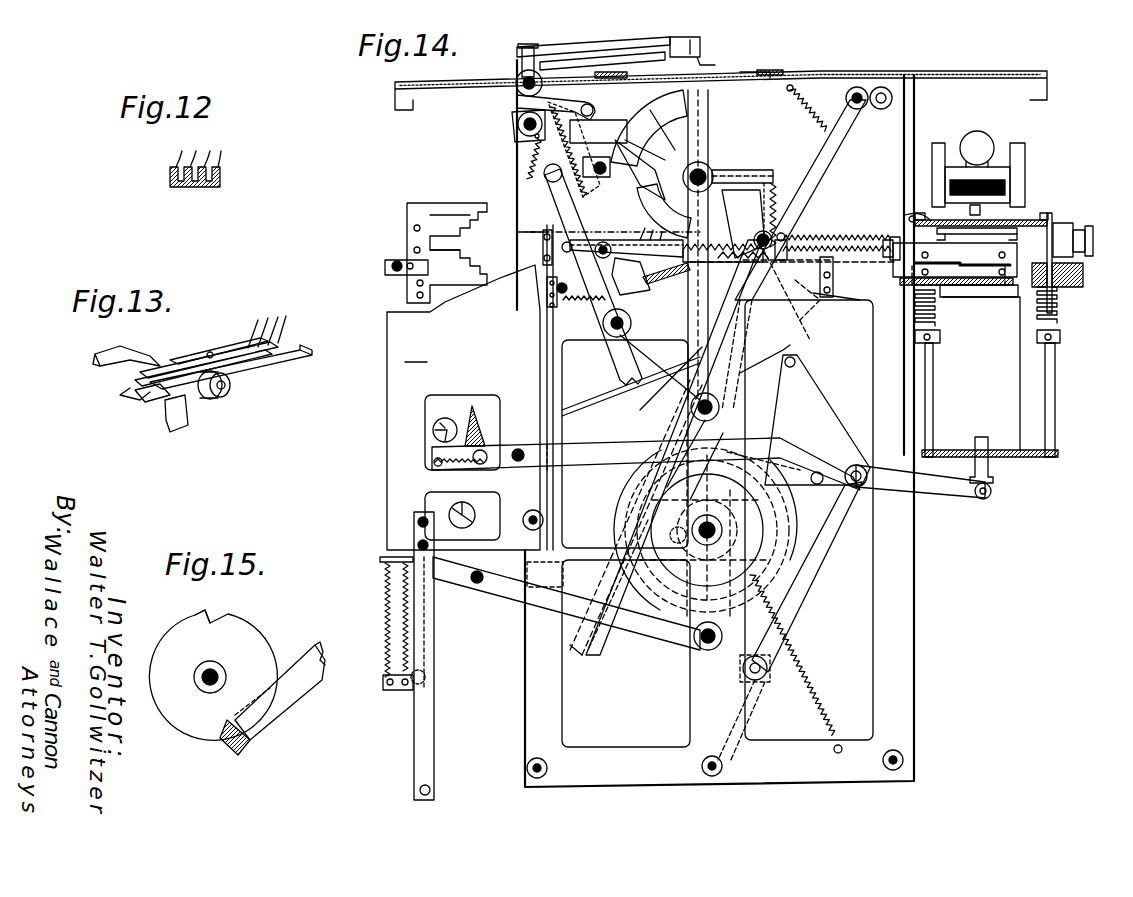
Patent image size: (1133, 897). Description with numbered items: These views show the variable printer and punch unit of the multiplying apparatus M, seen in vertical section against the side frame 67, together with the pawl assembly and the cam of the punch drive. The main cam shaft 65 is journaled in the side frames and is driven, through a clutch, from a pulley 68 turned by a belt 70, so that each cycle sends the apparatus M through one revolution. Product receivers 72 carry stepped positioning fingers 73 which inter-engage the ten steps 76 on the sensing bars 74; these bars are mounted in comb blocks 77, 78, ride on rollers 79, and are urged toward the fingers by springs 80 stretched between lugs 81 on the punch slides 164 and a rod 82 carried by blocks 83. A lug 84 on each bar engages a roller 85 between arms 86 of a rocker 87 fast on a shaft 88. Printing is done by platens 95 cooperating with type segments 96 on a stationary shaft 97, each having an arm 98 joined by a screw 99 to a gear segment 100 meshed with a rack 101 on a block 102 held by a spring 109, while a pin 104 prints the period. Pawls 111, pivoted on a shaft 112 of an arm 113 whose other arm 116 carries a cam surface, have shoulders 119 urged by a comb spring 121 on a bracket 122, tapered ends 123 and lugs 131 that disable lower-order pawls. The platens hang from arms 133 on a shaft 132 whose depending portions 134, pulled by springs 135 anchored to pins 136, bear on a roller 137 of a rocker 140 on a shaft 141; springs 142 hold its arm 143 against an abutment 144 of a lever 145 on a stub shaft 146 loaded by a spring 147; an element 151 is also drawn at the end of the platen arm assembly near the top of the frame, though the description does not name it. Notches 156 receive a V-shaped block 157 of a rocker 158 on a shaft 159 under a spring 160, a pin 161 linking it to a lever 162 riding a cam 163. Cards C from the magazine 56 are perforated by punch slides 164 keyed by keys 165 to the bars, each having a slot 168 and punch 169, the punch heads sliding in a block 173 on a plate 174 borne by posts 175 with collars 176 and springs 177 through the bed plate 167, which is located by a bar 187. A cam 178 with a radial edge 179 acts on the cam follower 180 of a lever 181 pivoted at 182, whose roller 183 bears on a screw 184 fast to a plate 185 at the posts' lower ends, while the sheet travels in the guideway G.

In FIG. 14, the magazine 56 is at (1025, 153).
In FIG. 15, the main cam shaft 65 is at (203, 675).
In FIG. 14, the main cam shaft 65 is at (723, 531).
In FIG. 14, the side frame 67 is at (889, 115).
In FIG. 14, the pulley 68 is at (625, 485).
In FIG. 14, the belt 70 is at (790, 612).
In FIG. 14, the product receiver 72 is at (407, 240).
In FIG. 14, the positioning finger 73 is at (445, 222).
In FIG. 14, the sensing bar 74 is at (546, 234).
In FIG. 14, the step 76 is at (543, 283).
In FIG. 14, the comb block 77 is at (567, 295).
In FIG. 14, the comb block 78 is at (837, 276).
In FIG. 14, the roller 79 is at (600, 337).
In FIG. 14, the spring 80 is at (885, 238).
In FIG. 14, the lug 81 is at (895, 237).
In FIG. 14, the rod 82 is at (802, 238).
In FIG. 14, the block 83 is at (806, 238).
In FIG. 14, the lug 84 is at (767, 359).
In FIG. 14, the roller 85 is at (702, 310).
In FIG. 14, the arm 86 is at (687, 362).
In FIG. 14, the rocker 87 is at (655, 402).
In FIG. 14, the shaft 88 is at (722, 418).
In FIG. 14, the platen 95 is at (725, 76).
In FIG. 14, the type segment 96 is at (688, 91).
In FIG. 14, the stationary shaft 97 is at (714, 166).
In FIG. 14, the arm 98 is at (775, 146).
In FIG. 14, the screw 99 is at (778, 182).
In FIG. 14, the gear segment 100 is at (697, 211).
In FIG. 14, the rack 101 is at (743, 224).
In FIG. 14, the block 102 is at (792, 330).
In FIG. 14, the pin 104 is at (695, 106).
In FIG. 14, the spring 109 is at (662, 265).
In FIG. 12, the pawl 111 is at (200, 146).
In FIG. 13, the pawl 111 is at (267, 323).
In FIG. 14, the pawl 111 is at (653, 226).
In FIG. 13, the shaft 112 is at (231, 390).
In FIG. 13, the arm 113 is at (187, 420).
In FIG. 14, the arm 116 is at (682, 325).
In FIG. 13, the shoulder 119 is at (312, 352).
In FIG. 13, the comb spring 121 is at (175, 355).
In FIG. 14, the comb spring 121 is at (617, 240).
In FIG. 13, the bracket 122 is at (98, 370).
In FIG. 13, the tapered end 123 is at (130, 390).
In FIG. 12, the lug 131 is at (214, 187).
In FIG. 13, the lug 131 is at (142, 405).
In FIG. 14, the shaft 132 is at (522, 60).
In FIG. 14, the arm 133 is at (600, 63).
In FIG. 14, the depending portion 134 is at (552, 50).
In FIG. 14, the spring 135 is at (584, 138).
In FIG. 14, the pin 136 is at (584, 190).
In FIG. 14, the roller 137 is at (622, 76).
In FIG. 14, the rocker 140 is at (510, 100).
In FIG. 14, the shaft 141 is at (513, 128).
In FIG. 14, the spring 142 is at (528, 140).
In FIG. 14, the arm 143 is at (543, 175).
In FIG. 14, the abutment 144 is at (536, 179).
In FIG. 14, the lever 145 is at (505, 280).
In FIG. 14, the stub shaft 146 is at (605, 342).
In FIG. 14, the spring 147 is at (540, 322).
In FIG. 14, the roller 151 is at (684, 36).
In FIG. 14, the notch 156 is at (781, 226).
In FIG. 14, the V-shaped block 157 is at (773, 235).
In FIG. 14, the rocker 158 is at (823, 152).
In FIG. 14, the shaft 159 is at (857, 87).
In FIG. 14, the spring 160 is at (806, 86).
In FIG. 14, the pin 161 is at (805, 310).
In FIG. 14, the lever 162 is at (641, 432).
In FIG. 14, the cam 163 is at (665, 598).
In FIG. 14, the punch slide 164 is at (963, 298).
In FIG. 14, the key 165 is at (856, 299).
In FIG. 14, the bed plate 167 is at (1054, 289).
In FIG. 14, the slot 168 is at (978, 250).
In FIG. 14, the punch 169 is at (1015, 228).
In FIG. 14, the block 173 is at (920, 210).
In FIG. 14, the plate 174 is at (1030, 220).
In FIG. 14, the post 175 is at (936, 415).
In FIG. 14, the collar 176 is at (940, 340).
In FIG. 14, the spring 177 is at (920, 340).
In FIG. 15, the cam 178 is at (235, 628).
In FIG. 15, the radially extending edge 179 is at (205, 610).
In FIG. 15, the cam follower 180 is at (245, 754).
In FIG. 15, the lever 181 is at (285, 692).
In FIG. 14, the lever 181 is at (820, 517).
In FIG. 14, the pivot 182 is at (852, 464).
In FIG. 14, the roller 183 is at (988, 499).
In FIG. 14, the screw 184 is at (993, 473).
In FIG. 14, the plate 185 is at (1002, 450).
In FIG. 14, the bar 187 is at (1006, 328).
In FIG. 14, the guideway G is at (753, 76).
In FIG. 14, the card C is at (1005, 188).
In FIG. 14, the multiplying apparatus M is at (470, 387).